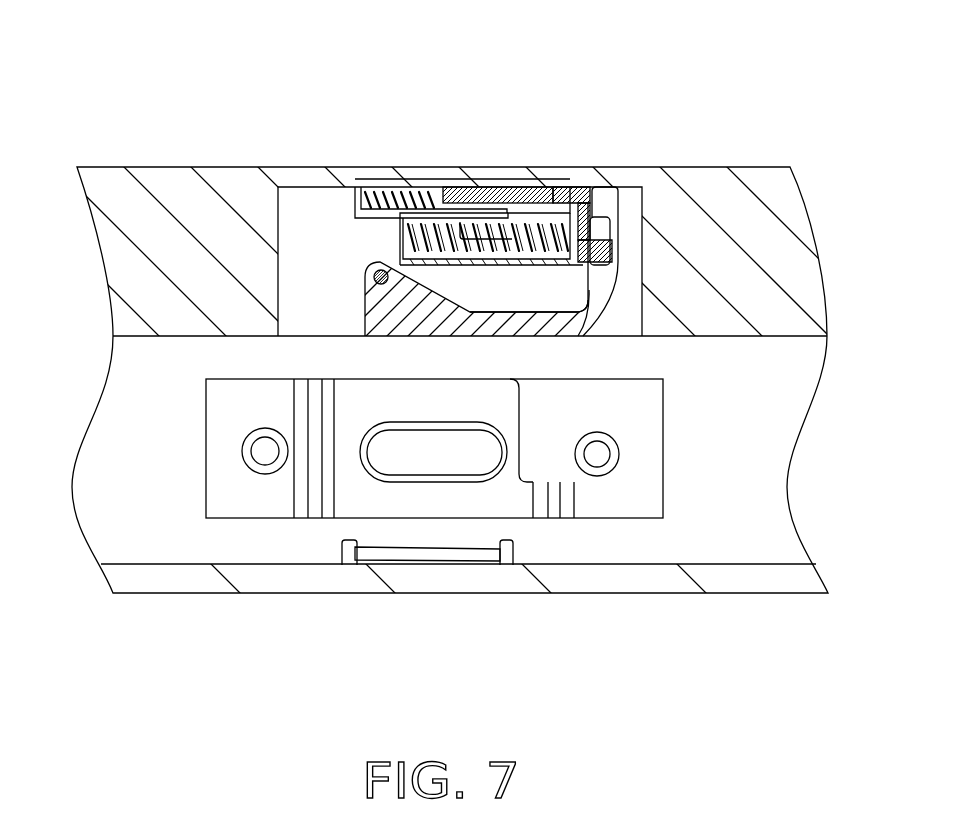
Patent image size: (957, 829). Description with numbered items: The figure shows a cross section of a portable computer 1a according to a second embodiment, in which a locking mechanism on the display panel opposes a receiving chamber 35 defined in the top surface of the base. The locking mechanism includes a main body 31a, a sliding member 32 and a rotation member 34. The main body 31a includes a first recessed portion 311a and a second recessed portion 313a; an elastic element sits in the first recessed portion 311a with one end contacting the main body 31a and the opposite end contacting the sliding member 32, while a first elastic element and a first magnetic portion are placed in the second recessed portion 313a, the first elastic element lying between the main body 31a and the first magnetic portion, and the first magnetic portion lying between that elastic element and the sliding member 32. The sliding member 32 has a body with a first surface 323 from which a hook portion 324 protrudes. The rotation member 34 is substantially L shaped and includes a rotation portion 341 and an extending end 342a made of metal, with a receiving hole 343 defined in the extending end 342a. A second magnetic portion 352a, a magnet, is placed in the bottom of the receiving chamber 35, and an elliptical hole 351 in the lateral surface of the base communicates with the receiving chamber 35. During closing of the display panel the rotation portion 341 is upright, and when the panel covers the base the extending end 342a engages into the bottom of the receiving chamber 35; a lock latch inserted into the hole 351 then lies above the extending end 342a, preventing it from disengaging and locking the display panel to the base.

The portable computer 1a is at (287, 95).
The main body 31a is at (400, 179).
The first recessed portion 311a is at (487, 222).
The second recessed portion 313a is at (522, 208).
The sliding member 32 is at (586, 190).
The first surface 323 is at (613, 240).
The hook portion 324 is at (610, 254).
The rotation member 34 is at (383, 311).
The rotation portion 341 is at (530, 323).
The extending end 342a is at (597, 290).
The receiving hole 343 is at (612, 258).
The receiving chamber 35 is at (480, 450).
The hole 351 is at (365, 470).
The second magnetic portion 352a is at (438, 558).